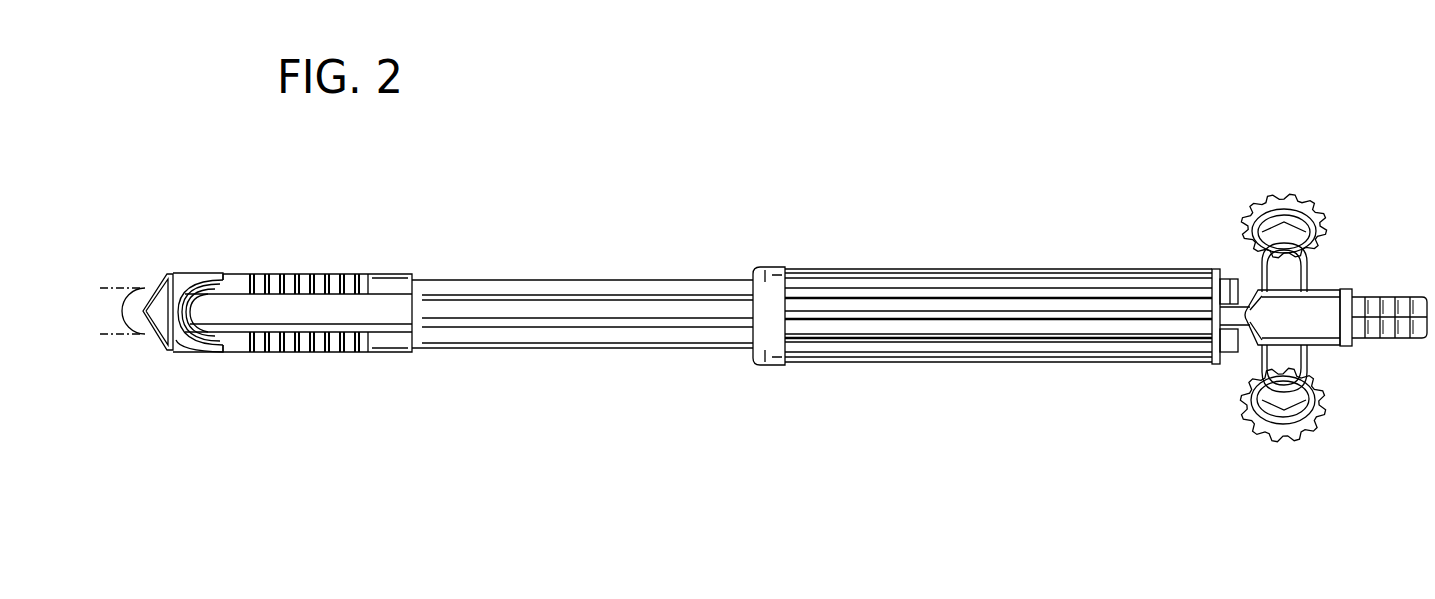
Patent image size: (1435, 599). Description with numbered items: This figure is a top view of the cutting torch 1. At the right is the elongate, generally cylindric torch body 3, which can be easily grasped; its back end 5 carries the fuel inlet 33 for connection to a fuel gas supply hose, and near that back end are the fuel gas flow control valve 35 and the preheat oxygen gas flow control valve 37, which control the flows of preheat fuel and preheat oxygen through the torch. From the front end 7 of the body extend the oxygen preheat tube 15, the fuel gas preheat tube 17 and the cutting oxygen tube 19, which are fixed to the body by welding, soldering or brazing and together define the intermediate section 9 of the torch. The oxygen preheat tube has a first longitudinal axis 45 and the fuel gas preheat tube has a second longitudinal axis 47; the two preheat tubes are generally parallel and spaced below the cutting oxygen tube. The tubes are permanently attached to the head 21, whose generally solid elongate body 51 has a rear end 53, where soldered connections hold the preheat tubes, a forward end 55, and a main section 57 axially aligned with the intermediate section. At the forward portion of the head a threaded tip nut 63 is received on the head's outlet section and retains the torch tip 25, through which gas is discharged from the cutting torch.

The cutting torch 1 is at (872, 253).
The torch body 3 is at (1040, 268).
The back end 5 is at (1353, 343).
The front end 7 is at (752, 270).
The intermediate section 9 is at (582, 291).
The oxygen preheat tube 15 is at (510, 284).
The fuel gas preheat tube 17 is at (592, 346).
The cutting oxygen tube 19 is at (643, 316).
The head 21 is at (319, 319).
The torch tip 25 is at (125, 326).
The fuel inlet 33 is at (1428, 292).
The fuel gas flow control valve 35 is at (1295, 440).
The preheat oxygen gas flow control valve 37 is at (1290, 196).
The first longitudinal axis 45 is at (113, 287).
The second longitudinal axis 47 is at (113, 338).
The elongate body 51 is at (298, 274).
The rear end 53 is at (415, 351).
The forward end 55 is at (170, 352).
The main section 57 is at (347, 352).
The tip nut 63 is at (178, 271).